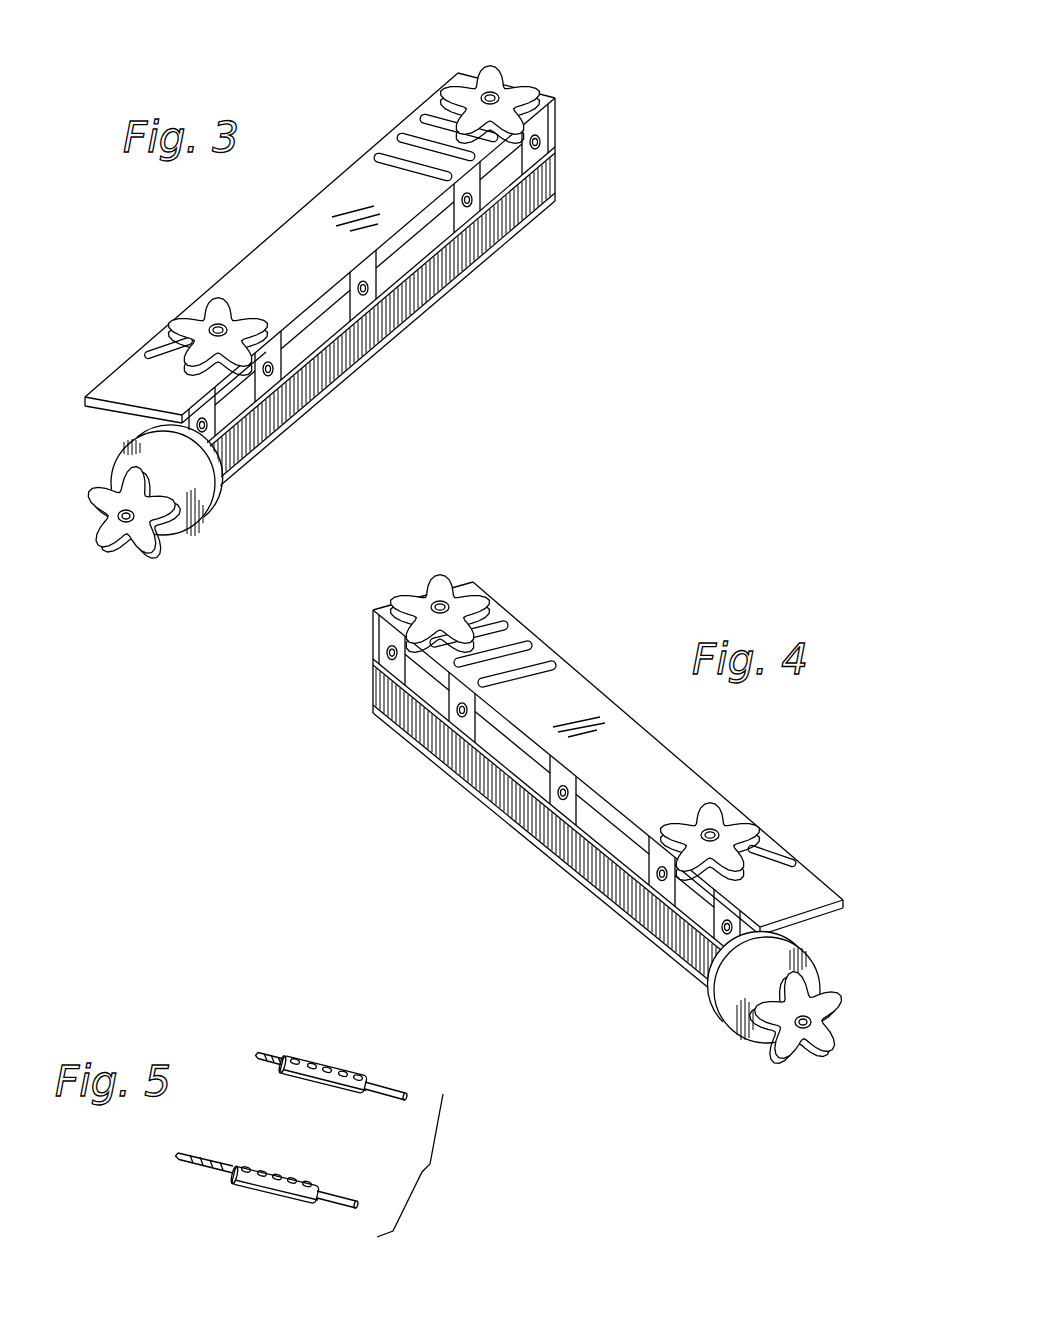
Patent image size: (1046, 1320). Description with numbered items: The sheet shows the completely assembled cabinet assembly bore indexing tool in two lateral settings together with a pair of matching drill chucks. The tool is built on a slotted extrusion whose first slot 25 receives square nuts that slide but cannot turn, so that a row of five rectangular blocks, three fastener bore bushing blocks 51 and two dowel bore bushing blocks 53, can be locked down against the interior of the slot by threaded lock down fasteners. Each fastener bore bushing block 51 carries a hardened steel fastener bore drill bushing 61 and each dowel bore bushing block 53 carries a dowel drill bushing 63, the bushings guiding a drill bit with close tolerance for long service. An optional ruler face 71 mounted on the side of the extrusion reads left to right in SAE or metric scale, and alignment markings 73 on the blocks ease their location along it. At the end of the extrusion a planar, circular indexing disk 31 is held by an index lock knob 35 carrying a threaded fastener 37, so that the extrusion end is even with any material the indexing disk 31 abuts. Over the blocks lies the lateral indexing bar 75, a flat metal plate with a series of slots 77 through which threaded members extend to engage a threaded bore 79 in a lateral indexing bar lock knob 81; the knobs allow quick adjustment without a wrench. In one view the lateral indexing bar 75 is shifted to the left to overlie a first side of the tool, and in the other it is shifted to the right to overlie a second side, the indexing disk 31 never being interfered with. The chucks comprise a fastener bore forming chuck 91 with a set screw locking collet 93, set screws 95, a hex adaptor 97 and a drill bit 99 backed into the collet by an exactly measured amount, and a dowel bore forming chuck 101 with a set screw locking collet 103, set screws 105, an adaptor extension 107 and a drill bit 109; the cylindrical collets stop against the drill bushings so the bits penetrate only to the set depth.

In FIG. 3, the first slot 25 is at (400, 232).
In FIG. 4, the first slot 25 is at (522, 735).
In FIG. 3, the indexing disk 31 is at (205, 522).
In FIG. 4, the indexing disk 31 is at (735, 1046).
In FIG. 3, the index lock knob 35 is at (98, 482).
In FIG. 4, the index lock knob 35 is at (838, 1000).
In FIG. 3, the threaded fastener 37 is at (122, 521).
In FIG. 4, the threaded fastener 37 is at (806, 1028).
In FIG. 3, the fastener bore bushing block 51 is at (550, 127).
In FIG. 4, the fastener bore bushing block 51 is at (373, 637).
In FIG. 3, the dowel bore bushing block 53 is at (425, 224).
In FIG. 4, the dowel bore bushing block 53 is at (487, 712).
In FIG. 3, the fastener bore drill bushing 61 is at (541, 143).
In FIG. 4, the fastener bore drill bushing 61 is at (390, 652).
In FIG. 3, the dowel drill bushing 63 is at (456, 210).
In FIG. 4, the dowel drill bushing 63 is at (457, 700).
In FIG. 3, the ruler face 71 is at (258, 442).
In FIG. 4, the ruler face 71 is at (577, 820).
In FIG. 3, the alignment markings 73 is at (474, 196).
In FIG. 4, the alignment markings 73 is at (560, 789).
In FIG. 3, the lateral indexing bar 75 is at (100, 388).
In FIG. 4, the lateral indexing bar 75 is at (832, 896).
In FIG. 3, the slots 77 is at (420, 117).
In FIG. 4, the slots 77 is at (556, 664).
In FIG. 3, the threaded bore 79 is at (493, 93).
In FIG. 4, the threaded bore 79 is at (440, 603).
In FIG. 3, the lateral indexing bar lock knob 81 is at (546, 102).
In FIG. 4, the lateral indexing bar lock knob 81 is at (392, 607).
In FIG. 5, the fastener bore forming chuck 91 is at (245, 1180).
In FIG. 5, the set screw locking collet 93 is at (258, 1191).
In FIG. 5, the set screws 95 is at (306, 1182).
In FIG. 5, the hex adaptor 97 is at (345, 1203).
In FIG. 5, the drill bit 99 is at (192, 1165).
In FIG. 5, the dowel bore forming chuck 101 is at (338, 1057).
In FIG. 5, the set screw locking collet 103 is at (311, 1083).
In FIG. 5, the set screws 105 is at (312, 1063).
In FIG. 5, the adaptor extension 107 is at (396, 1085).
In FIG. 5, the drill bit 109 is at (262, 1052).